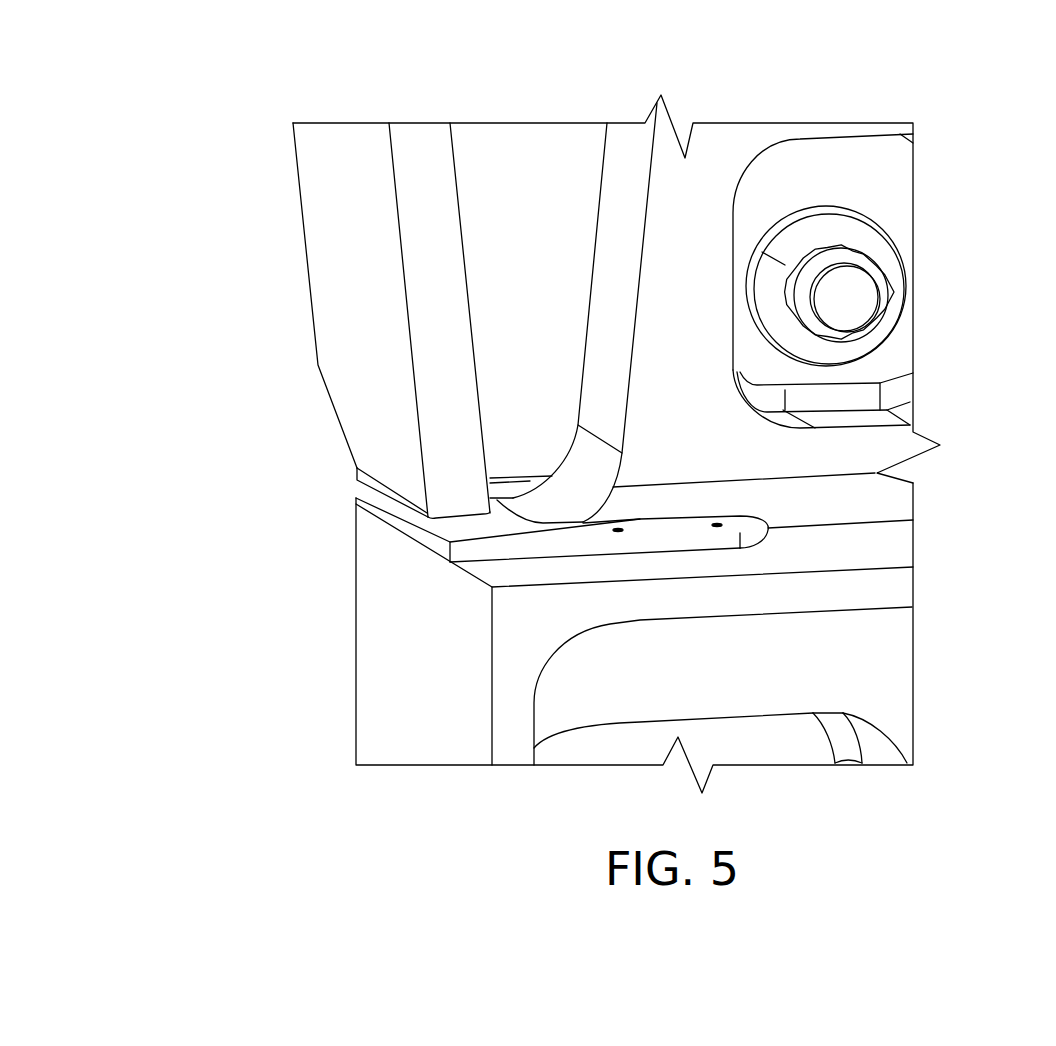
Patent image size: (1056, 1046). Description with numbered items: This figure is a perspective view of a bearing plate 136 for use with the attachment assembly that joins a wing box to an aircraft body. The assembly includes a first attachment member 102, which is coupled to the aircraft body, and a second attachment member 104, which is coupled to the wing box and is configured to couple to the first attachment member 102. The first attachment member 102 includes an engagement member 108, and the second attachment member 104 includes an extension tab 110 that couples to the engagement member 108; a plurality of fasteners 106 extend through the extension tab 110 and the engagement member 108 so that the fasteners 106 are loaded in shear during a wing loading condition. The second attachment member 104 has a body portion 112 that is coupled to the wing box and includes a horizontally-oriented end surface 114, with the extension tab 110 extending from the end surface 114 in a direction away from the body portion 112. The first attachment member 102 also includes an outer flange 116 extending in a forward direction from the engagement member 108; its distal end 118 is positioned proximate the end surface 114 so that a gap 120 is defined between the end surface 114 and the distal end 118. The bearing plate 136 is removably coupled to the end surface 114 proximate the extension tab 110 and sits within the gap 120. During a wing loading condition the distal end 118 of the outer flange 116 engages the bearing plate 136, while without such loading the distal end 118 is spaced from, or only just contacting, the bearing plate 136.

The first attachment member 102 is at (262, 186).
The second attachment member 104 is at (327, 717).
The fasteners 106 is at (833, 295).
The engagement member 108 is at (549, 163).
The extension tab 110 is at (877, 443).
The body portion 112 is at (878, 663).
The end surface 114 is at (877, 549).
The outer flange 116 is at (340, 318).
The distal end 118 is at (373, 462).
The gap 120 is at (342, 480).
The bearing plate 136 is at (387, 514).